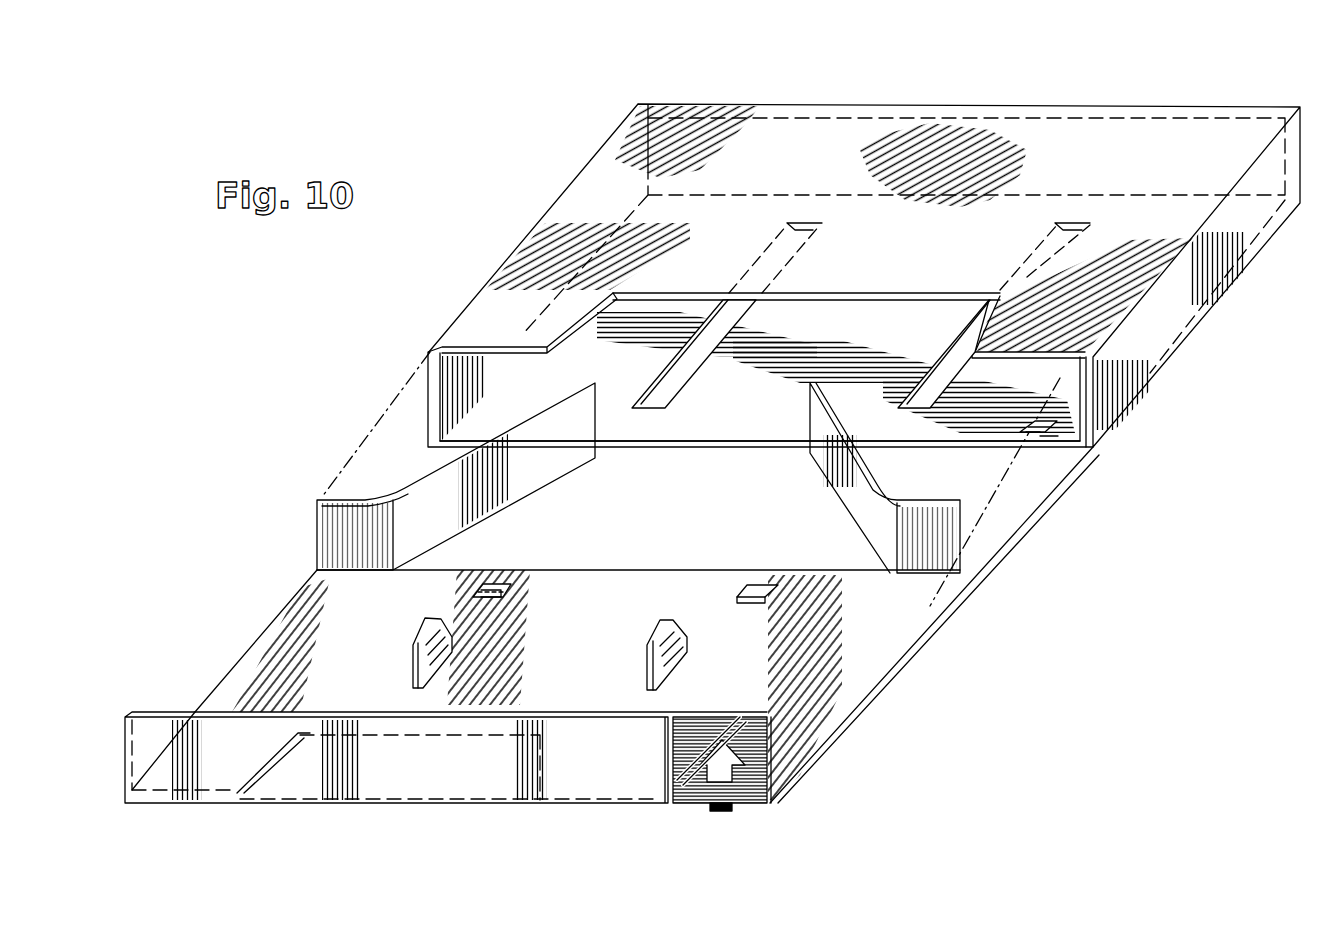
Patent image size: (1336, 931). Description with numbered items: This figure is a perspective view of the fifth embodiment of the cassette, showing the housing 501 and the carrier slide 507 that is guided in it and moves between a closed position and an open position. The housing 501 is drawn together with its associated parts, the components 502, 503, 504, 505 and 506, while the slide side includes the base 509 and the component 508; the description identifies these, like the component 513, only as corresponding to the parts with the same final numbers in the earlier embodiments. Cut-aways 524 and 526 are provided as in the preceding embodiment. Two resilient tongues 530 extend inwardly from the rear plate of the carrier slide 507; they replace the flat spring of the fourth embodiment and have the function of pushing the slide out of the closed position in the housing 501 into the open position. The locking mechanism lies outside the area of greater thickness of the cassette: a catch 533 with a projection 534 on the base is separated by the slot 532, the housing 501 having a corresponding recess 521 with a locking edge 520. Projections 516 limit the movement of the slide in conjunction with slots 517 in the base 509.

The housing 501 is at (1101, 103).
The corresponding component 502 is at (603, 187).
The corresponding component 503 is at (750, 427).
The corresponding component 504 is at (1160, 333).
The corresponding component 505 is at (482, 366).
The corresponding component 506 is at (868, 130).
The carrier slide 507 is at (703, 563).
The corresponding component 508 is at (446, 757).
The base 509 is at (335, 586).
The corresponding component 513 is at (427, 634).
The projections 516 is at (512, 596).
The slots 517 is at (672, 396).
The locking edge 520 is at (1022, 428).
The recess 521 is at (1050, 427).
The cut-away 524 is at (512, 741).
The cut-away 526 is at (813, 300).
The resilient tongues 530 is at (546, 478).
The slot 532 is at (754, 714).
The catch 533 is at (702, 700).
The projection 534 is at (738, 812).